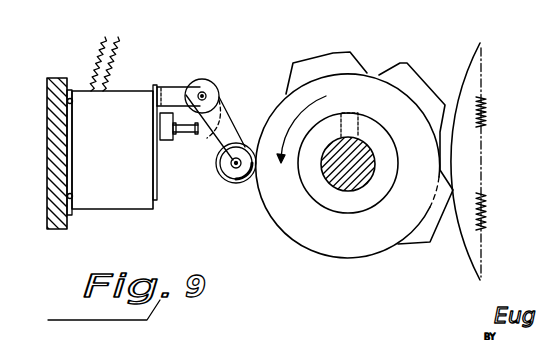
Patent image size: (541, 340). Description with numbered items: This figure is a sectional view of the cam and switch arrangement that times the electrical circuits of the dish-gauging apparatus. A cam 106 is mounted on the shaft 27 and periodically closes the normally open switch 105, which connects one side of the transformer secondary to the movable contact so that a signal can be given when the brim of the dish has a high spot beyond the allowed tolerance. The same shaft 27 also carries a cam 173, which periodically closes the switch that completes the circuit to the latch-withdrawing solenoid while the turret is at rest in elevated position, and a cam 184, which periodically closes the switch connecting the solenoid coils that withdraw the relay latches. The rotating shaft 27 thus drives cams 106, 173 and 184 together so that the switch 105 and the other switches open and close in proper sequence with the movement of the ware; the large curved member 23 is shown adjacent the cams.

The normally open switch 105 is at (112, 126).
The cam 106 is at (348, 166).
The cam 173 is at (336, 54).
The cam 184 is at (421, 86).
The shaft 27 is at (362, 149).
The drum 23 is at (475, 67).